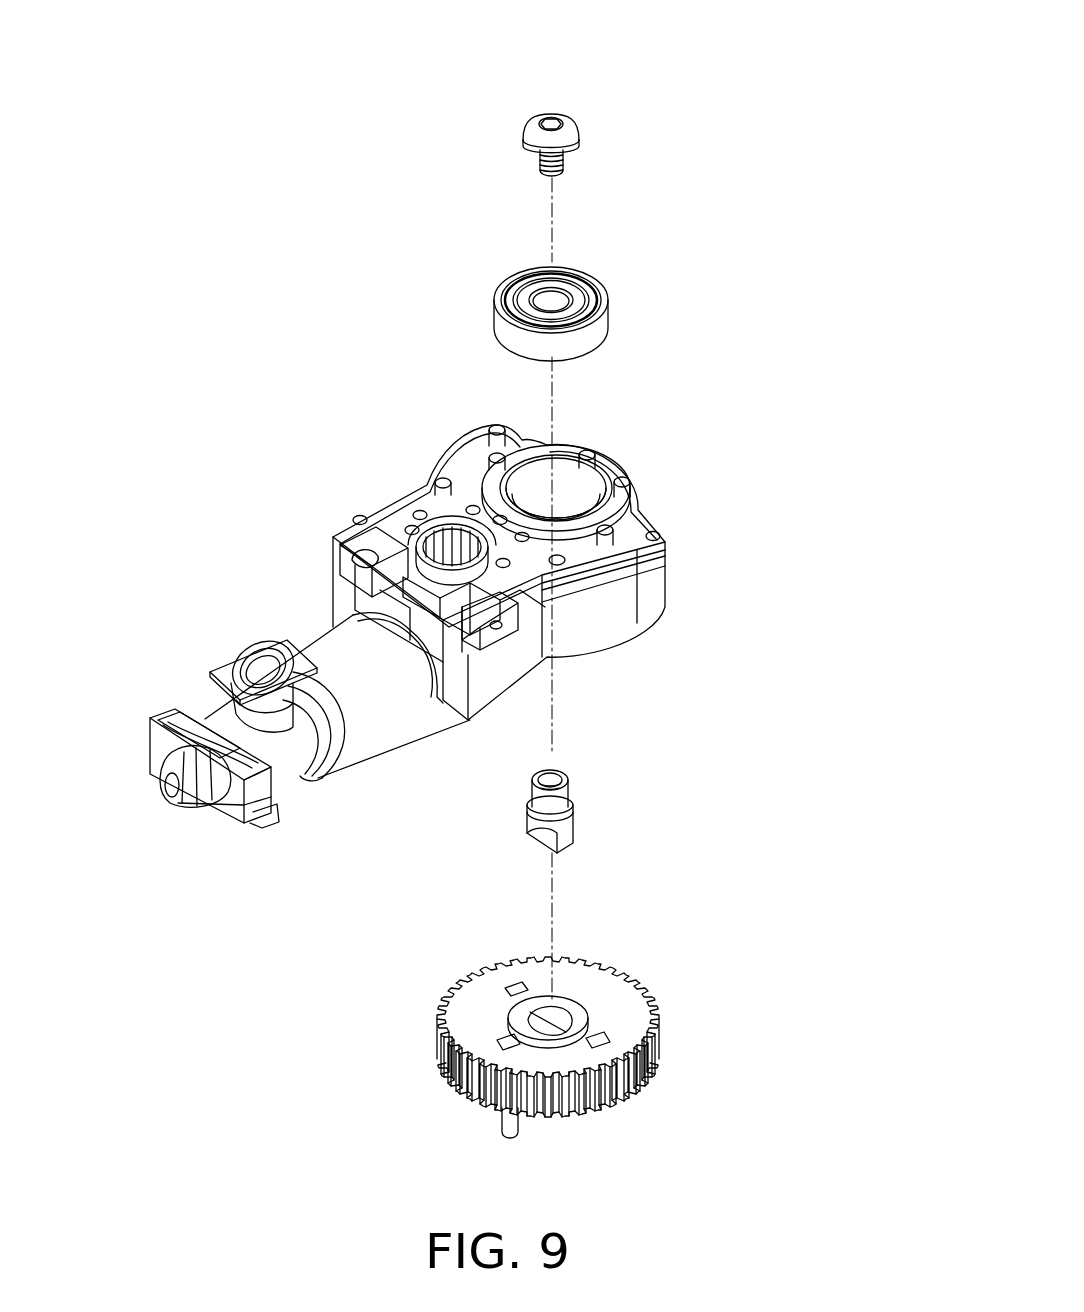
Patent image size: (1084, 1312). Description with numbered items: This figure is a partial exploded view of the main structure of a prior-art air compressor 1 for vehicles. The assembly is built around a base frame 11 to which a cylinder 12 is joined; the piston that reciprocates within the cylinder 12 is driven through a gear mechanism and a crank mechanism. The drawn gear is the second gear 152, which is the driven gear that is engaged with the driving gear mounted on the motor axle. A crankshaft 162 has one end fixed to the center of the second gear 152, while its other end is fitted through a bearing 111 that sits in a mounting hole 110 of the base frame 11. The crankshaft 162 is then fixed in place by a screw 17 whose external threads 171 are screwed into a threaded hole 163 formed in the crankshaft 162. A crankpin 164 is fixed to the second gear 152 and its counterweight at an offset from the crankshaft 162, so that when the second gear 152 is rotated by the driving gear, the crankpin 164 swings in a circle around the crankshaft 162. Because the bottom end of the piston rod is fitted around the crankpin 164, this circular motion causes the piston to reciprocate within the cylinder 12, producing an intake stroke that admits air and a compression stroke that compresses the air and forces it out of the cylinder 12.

The air compressor 1 is at (259, 891).
The base frame 11 is at (568, 572).
The mounting hole 110 is at (633, 500).
The bearing 111 is at (597, 330).
The cylinder 12 is at (323, 648).
The second gear 152 is at (615, 998).
The crankshaft 162 is at (631, 804).
The threaded hole 163 is at (566, 773).
The crankpin 164 is at (517, 1123).
The screw 17 is at (569, 150).
The external threads 171 is at (563, 168).